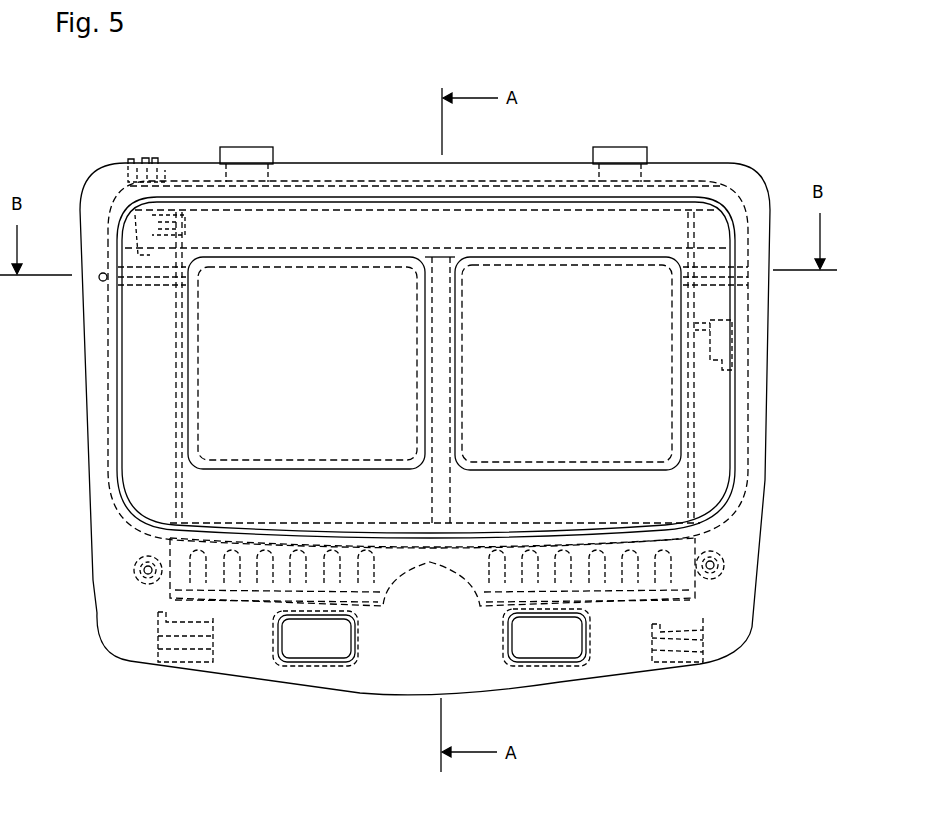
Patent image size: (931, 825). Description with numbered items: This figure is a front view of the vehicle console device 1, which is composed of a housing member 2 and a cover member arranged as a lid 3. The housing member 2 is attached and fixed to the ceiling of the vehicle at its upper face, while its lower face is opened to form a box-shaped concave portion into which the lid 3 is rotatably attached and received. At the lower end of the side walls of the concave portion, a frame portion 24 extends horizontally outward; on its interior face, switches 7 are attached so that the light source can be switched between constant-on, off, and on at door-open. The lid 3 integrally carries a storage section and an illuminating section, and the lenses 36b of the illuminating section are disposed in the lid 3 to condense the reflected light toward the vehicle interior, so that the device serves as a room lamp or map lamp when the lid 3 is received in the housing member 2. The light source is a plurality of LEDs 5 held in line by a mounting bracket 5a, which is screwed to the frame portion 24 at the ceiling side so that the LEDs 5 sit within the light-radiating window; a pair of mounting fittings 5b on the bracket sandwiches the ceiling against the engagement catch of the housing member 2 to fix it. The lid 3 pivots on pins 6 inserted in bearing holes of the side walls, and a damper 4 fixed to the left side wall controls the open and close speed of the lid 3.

The vehicle console device 1 is at (710, 95).
The housing member 2 is at (755, 465).
The lid 3 is at (716, 405).
The damper 4 is at (733, 345).
The LED 5 is at (712, 578).
The mounting bracket 5a is at (140, 590).
The mounting fittings 5b is at (674, 660).
The pin 6 is at (100, 284).
The switches 7 is at (312, 646).
The frame portion 24 is at (122, 614).
The lens 36b is at (331, 328).